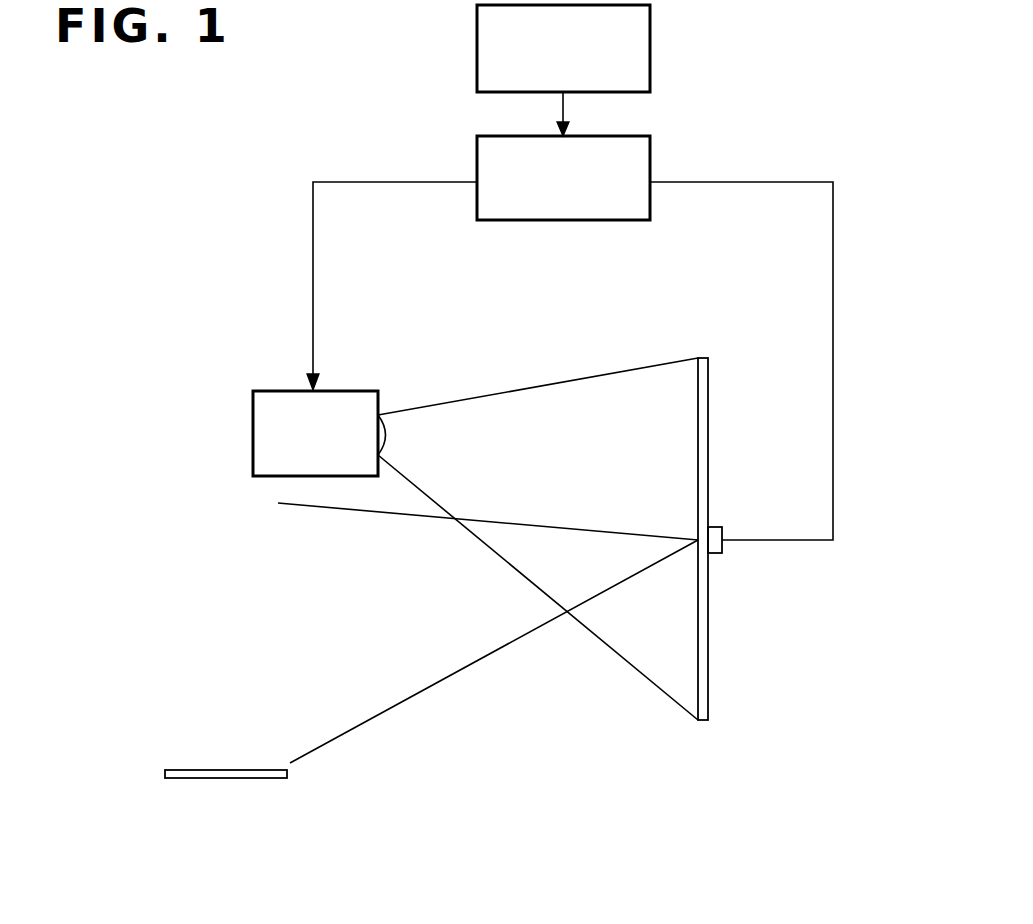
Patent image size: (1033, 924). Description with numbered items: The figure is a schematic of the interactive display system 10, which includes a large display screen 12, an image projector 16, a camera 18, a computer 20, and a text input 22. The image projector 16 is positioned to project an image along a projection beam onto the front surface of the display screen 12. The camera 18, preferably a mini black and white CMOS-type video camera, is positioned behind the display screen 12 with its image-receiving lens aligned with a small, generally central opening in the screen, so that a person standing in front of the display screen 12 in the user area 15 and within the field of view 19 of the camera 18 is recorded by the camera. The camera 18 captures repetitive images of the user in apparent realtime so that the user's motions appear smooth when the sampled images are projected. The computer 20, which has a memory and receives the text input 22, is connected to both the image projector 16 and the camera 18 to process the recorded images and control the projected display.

The interactive display system 10 is at (327, 170).
The display screen 12 is at (708, 678).
The user area 15 is at (185, 770).
The image projector 16 is at (270, 403).
The camera 18 is at (722, 535).
The field of view 19 is at (468, 643).
The computer 20 is at (627, 208).
The text input 22 is at (640, 34).